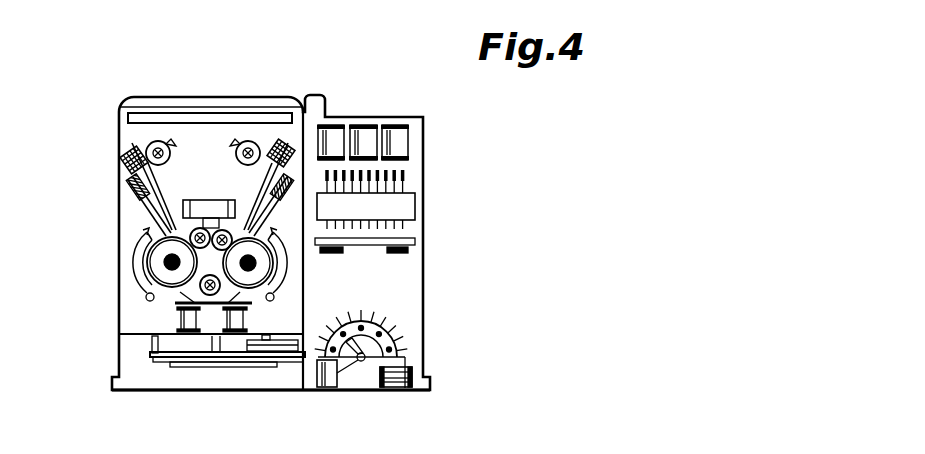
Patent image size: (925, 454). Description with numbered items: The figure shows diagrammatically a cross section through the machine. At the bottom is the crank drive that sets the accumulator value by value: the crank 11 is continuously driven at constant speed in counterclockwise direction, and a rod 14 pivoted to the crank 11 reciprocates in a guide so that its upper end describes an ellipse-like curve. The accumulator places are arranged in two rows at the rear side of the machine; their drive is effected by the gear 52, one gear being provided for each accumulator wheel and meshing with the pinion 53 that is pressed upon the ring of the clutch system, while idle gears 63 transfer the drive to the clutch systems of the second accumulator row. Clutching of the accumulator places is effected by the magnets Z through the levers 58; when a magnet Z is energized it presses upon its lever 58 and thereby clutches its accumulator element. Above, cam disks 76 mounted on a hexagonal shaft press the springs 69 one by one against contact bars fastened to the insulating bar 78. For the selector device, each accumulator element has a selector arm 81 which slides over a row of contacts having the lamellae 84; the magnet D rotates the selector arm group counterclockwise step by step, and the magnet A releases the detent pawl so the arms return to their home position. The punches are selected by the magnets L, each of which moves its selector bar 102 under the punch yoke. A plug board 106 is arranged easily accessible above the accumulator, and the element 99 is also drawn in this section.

The plug board 106 is at (205, 118).
The gear 52 is at (222, 235).
The cam disk 76 is at (148, 150).
The insulating bar 78 is at (124, 162).
The spring 69 is at (136, 186).
The idle gear 63 is at (195, 236).
The pinion 53 is at (158, 268).
The lever 58 is at (182, 292).
The magnet Z is at (237, 318).
The rod 14 is at (200, 355).
The crank 11 is at (277, 348).
The selector magnet L is at (400, 140).
The selector bar 102 is at (403, 176).
The circuit board 99 is at (400, 210).
The lamella 84 is at (385, 319).
The selector arm 81 is at (366, 356).
The magnet D is at (327, 388).
The magnet A is at (401, 385).